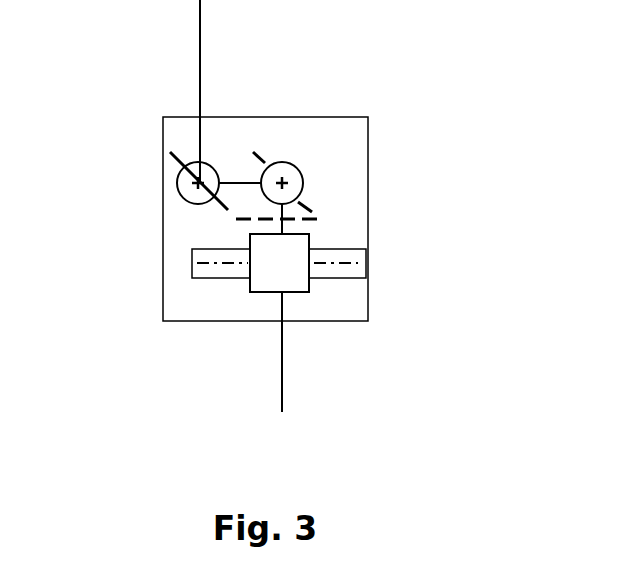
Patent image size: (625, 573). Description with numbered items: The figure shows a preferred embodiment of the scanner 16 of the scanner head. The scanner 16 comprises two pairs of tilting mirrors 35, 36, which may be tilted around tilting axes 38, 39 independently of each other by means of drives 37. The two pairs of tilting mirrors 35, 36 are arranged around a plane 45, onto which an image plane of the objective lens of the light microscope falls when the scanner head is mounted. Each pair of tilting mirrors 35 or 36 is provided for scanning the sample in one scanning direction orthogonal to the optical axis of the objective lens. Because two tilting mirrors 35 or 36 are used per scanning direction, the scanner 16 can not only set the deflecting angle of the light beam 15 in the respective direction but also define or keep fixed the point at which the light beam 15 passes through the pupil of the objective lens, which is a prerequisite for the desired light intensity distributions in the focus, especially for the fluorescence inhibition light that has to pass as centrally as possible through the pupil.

The light beam 15 is at (197, 47).
The scanner 16 is at (337, 99).
The tilting mirrors 35 is at (178, 162).
The tilting mirrors 36 is at (310, 242).
The drives 37 is at (208, 162).
The tilting axis 38 is at (193, 193).
The tilting axis 39 is at (353, 265).
The plane 45 is at (320, 220).